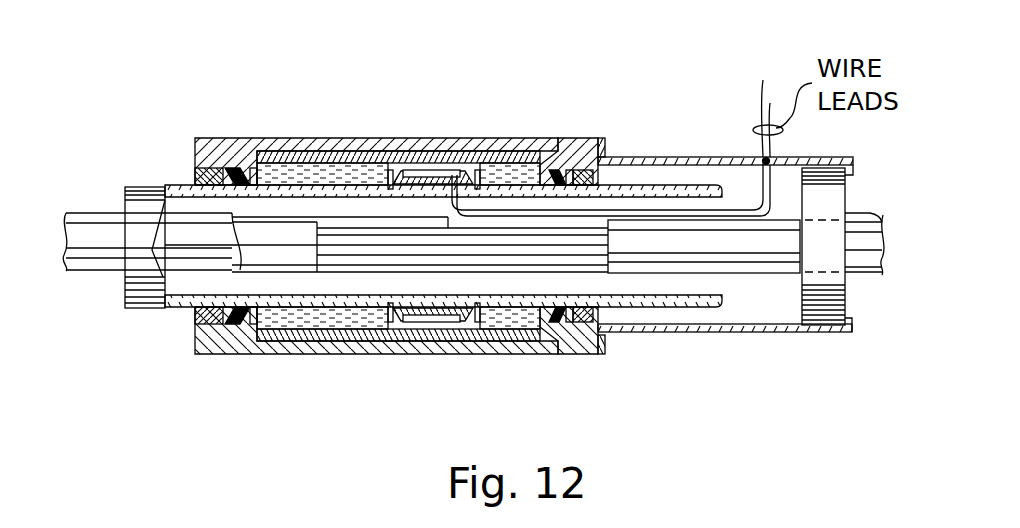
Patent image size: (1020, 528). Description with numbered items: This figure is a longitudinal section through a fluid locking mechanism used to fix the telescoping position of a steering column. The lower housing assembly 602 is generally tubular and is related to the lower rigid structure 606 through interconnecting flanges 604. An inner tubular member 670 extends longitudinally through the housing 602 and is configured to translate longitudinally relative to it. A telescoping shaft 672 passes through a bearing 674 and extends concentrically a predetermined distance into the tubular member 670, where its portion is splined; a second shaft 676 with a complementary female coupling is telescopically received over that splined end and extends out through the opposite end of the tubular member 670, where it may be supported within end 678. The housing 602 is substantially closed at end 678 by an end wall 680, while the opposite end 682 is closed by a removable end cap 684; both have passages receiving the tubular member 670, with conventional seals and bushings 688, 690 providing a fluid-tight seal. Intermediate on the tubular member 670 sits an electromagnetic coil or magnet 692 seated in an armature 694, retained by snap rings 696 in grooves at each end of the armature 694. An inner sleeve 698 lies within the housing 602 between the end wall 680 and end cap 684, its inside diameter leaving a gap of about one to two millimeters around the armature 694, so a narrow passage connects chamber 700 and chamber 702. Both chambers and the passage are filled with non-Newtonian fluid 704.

The lower housing assembly 602 is at (405, 130).
The interconnecting flanges 604 is at (605, 145).
The lower rigid structure 606 is at (704, 148).
The inner tubular member 670 is at (674, 319).
The telescoping shaft 672 is at (865, 212).
The bearing 674 is at (853, 283).
The second shaft 676 is at (68, 272).
The end 678 is at (126, 300).
The end wall 680 is at (563, 153).
The opposite end 682 is at (194, 146).
The removable end cap 684 is at (196, 330).
The seal 688 is at (204, 172).
The bushing 690 is at (238, 176).
The electromagnetic coil or magnet 692 is at (433, 323).
The armature 694 is at (470, 168).
The snap rings 696 is at (363, 152).
The inner sleeve 698 is at (364, 340).
The chamber 700 is at (513, 175).
The chamber 702 is at (318, 323).
The non-Newtonian fluid 704 is at (294, 160).